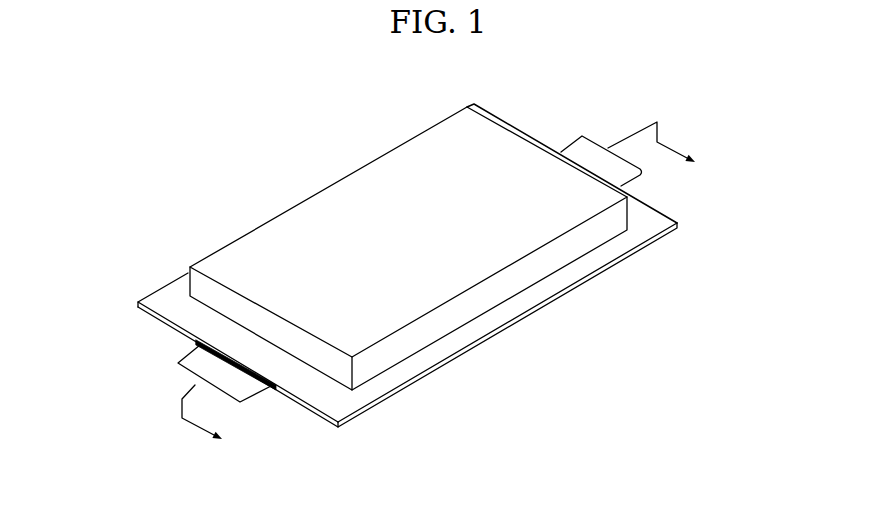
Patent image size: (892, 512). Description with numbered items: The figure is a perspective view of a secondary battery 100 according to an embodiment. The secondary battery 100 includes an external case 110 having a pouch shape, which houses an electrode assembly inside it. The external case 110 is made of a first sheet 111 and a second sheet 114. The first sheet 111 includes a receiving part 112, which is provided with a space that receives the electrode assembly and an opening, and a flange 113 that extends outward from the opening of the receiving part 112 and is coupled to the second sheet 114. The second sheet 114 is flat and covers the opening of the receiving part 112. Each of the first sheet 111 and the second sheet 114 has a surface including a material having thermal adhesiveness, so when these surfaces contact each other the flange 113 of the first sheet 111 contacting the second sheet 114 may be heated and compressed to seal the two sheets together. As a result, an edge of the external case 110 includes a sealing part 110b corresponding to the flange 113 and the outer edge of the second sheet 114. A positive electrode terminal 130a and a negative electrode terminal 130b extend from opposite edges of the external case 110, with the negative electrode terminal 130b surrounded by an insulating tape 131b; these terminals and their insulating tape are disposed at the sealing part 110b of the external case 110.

The secondary battery 100 is at (186, 170).
The external case 110 is at (137, 308).
The sealing part 110b is at (313, 390).
The first sheet 111 is at (188, 273).
The receiving part 112 is at (318, 198).
The flange 113 is at (158, 297).
The second sheet 114 is at (333, 428).
The positive electrode terminal 130a is at (188, 370).
The negative electrode terminal 130b is at (593, 145).
The insulating tape 131b is at (550, 147).